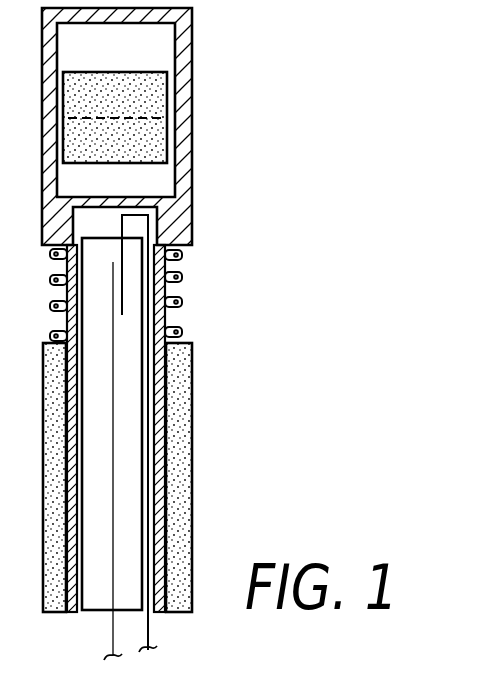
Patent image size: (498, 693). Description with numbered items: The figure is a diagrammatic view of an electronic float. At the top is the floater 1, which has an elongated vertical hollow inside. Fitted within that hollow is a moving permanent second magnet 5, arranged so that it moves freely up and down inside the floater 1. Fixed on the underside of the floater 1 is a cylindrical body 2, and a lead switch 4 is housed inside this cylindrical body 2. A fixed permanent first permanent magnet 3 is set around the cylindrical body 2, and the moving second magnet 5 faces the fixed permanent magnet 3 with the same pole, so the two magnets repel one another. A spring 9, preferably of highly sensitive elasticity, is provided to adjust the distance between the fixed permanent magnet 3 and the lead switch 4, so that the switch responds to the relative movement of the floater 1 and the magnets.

The floater 1 is at (190, 137).
The cylindrical body 2 is at (184, 343).
The first permanent magnet 3 is at (192, 398).
The lead switch 4 is at (127, 279).
The second magnet 5 is at (153, 100).
The spring 9 is at (183, 303).